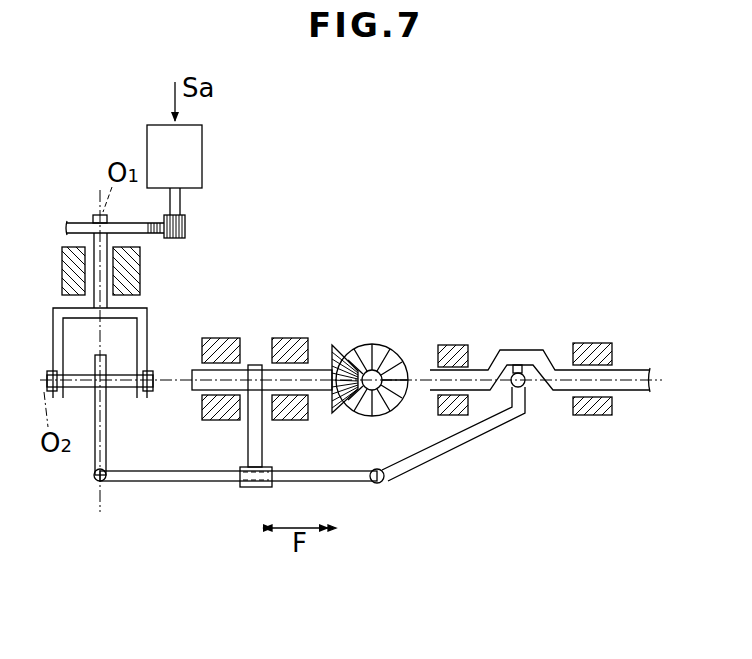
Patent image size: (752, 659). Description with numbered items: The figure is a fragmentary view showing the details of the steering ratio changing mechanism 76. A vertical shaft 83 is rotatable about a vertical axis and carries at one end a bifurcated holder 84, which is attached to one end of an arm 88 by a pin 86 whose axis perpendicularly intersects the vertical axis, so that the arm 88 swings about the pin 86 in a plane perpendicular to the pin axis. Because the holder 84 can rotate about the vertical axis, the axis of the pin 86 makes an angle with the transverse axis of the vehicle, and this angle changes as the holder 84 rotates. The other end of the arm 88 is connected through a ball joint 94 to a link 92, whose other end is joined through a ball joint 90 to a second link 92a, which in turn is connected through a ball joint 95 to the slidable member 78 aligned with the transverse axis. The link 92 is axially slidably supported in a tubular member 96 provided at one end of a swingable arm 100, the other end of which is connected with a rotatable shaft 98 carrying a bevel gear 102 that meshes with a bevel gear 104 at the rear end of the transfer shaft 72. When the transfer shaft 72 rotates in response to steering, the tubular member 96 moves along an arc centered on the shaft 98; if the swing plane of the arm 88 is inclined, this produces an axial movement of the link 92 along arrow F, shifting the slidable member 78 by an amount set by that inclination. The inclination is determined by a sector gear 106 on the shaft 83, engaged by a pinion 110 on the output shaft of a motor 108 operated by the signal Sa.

The transfer shaft 72 is at (371, 368).
The steering ratio changing mechanism 76 is at (243, 279).
The slidable member 78 is at (631, 372).
The vertical shaft 83 is at (112, 240).
The bifurcated holder 84 is at (157, 325).
The pin 86 is at (80, 392).
The arm 88 is at (107, 443).
The ball joint 90 is at (381, 483).
The link 92 is at (310, 483).
The second link 92a is at (441, 448).
The ball joint 94 is at (104, 480).
The ball joint 95 is at (522, 387).
The tubular member 96 is at (241, 488).
The rotatable shaft 98 is at (318, 368).
The swingable arm 100 is at (262, 455).
The bevel gear 102 is at (337, 349).
The bevel gear 104 is at (403, 350).
The sector gear 106 is at (155, 221).
The motor 108 is at (203, 158).
The pinion 110 is at (186, 226).